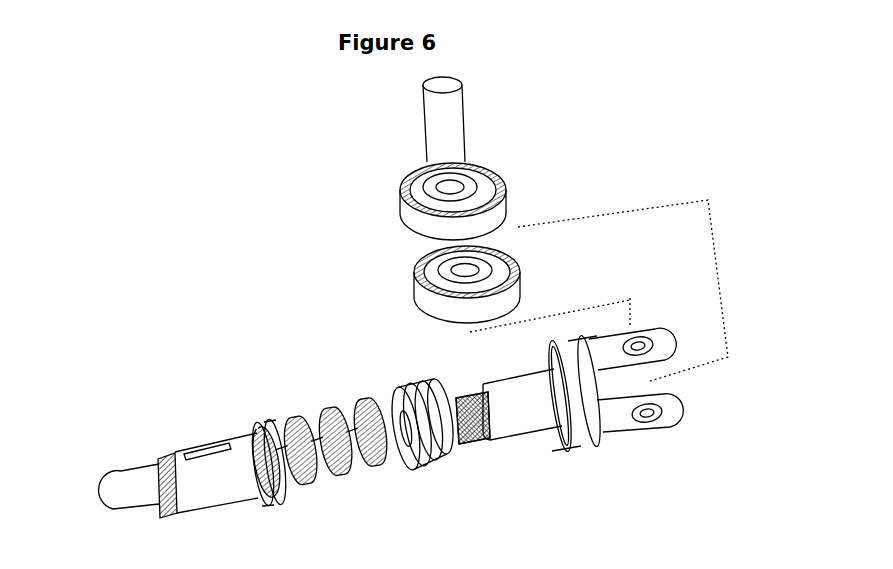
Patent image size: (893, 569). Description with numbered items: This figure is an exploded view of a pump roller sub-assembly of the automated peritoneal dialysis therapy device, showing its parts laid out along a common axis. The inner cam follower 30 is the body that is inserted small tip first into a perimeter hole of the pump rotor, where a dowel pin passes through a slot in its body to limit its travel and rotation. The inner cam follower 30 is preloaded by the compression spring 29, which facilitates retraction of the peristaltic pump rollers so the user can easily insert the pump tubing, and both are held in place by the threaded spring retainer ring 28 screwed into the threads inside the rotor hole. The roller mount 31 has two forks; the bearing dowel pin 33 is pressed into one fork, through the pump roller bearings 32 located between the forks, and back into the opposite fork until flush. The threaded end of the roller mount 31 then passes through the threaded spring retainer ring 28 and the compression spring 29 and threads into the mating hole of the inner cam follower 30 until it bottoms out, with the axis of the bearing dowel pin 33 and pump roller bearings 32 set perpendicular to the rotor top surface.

The threaded spring retainer ring 28 is at (410, 390).
The compression spring 29 is at (310, 420).
The inner cam follower 30 is at (174, 464).
The roller mount 31 is at (589, 402).
The pump roller bearings 32 is at (500, 211).
The bearing dowel pin 33 is at (455, 118).